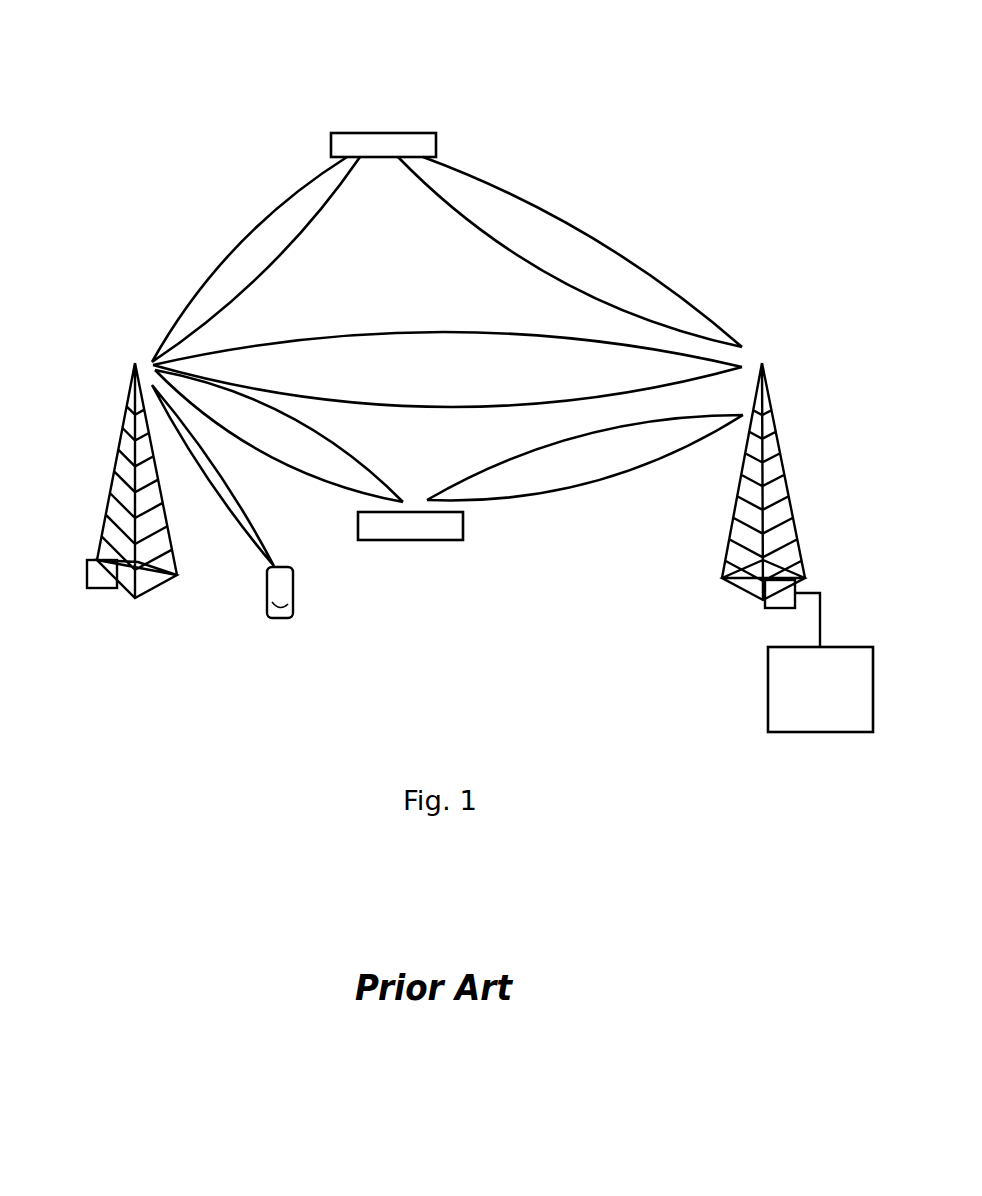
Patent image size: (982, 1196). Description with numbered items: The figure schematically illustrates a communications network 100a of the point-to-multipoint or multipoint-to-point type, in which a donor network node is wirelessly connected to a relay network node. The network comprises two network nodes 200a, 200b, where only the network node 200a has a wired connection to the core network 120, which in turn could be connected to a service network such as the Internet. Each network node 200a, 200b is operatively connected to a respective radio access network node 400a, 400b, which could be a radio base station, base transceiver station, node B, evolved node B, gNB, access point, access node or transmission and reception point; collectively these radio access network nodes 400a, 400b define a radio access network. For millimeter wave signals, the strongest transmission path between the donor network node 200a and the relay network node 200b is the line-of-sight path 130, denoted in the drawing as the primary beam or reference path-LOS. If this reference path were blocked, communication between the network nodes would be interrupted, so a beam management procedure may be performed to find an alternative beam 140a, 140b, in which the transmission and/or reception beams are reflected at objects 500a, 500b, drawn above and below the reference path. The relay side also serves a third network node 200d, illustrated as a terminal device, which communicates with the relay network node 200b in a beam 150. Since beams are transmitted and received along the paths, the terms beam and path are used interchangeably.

The communications network 100a is at (138, 61).
The core network 120 is at (777, 680).
The line-of-sight path 130 is at (425, 333).
The alternative beam 140a is at (222, 263).
The alternative beam 140b is at (368, 465).
The beam 150 is at (252, 547).
The network node 200a is at (763, 598).
The network node 200b is at (87, 577).
The third network node 200d is at (290, 612).
The radio access network node 400a is at (768, 390).
The radio access network node 400b is at (127, 378).
The object 500a is at (387, 142).
The object 500b is at (412, 533).